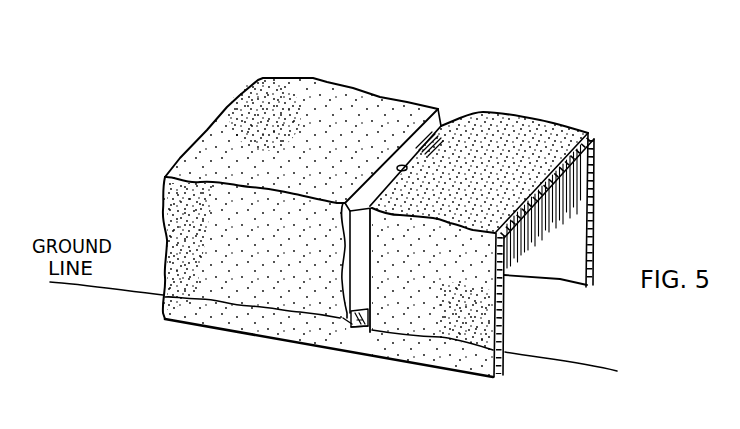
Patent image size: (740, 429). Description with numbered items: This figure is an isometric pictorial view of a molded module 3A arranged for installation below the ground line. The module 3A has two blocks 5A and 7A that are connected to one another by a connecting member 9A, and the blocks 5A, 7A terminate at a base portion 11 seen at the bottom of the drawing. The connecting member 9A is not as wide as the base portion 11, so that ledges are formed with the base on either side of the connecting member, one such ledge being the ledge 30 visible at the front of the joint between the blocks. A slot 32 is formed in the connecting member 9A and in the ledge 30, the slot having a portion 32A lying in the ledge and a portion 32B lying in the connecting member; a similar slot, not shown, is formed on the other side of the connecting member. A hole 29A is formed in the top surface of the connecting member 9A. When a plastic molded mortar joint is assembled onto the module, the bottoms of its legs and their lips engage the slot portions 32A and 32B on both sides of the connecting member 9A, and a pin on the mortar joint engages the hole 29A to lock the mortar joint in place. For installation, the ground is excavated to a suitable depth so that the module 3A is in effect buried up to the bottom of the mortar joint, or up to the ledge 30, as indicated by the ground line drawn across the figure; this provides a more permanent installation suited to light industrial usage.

The molded module 3A is at (198, 88).
The block 5A is at (231, 251).
The block 7A is at (448, 272).
The connecting member 9A is at (362, 237).
The hole 29A is at (399, 164).
The slot 32 is at (350, 313).
The slot portion 32A is at (371, 330).
The slot portion 32B is at (369, 311).
The ledge 30 is at (349, 327).
The base portion 11 is at (203, 329).